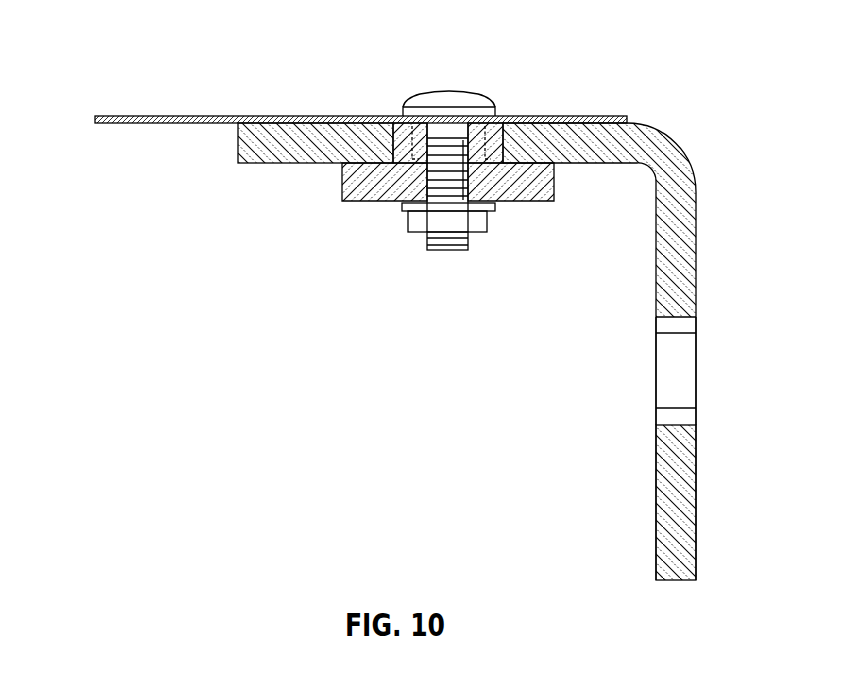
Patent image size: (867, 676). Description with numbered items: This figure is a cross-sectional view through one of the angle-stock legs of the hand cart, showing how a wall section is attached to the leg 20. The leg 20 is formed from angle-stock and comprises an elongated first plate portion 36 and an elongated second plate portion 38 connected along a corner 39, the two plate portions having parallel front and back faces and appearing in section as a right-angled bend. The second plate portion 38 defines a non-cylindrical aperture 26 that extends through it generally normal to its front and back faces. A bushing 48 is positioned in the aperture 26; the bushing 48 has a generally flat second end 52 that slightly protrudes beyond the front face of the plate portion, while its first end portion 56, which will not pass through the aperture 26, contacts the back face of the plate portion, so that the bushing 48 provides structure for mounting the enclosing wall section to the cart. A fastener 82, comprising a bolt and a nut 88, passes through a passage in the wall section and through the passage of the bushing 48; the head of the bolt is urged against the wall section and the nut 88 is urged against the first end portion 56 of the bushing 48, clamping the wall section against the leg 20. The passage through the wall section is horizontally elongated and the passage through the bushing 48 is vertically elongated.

The leg 20 is at (711, 251).
The aperture 26 is at (672, 372).
The elongated first plate portion 36 is at (697, 470).
The elongated second plate portion 38 is at (262, 165).
The corner 39 is at (677, 143).
The bushing 48 is at (371, 222).
The second end 52 is at (413, 124).
The first end portion 56 is at (362, 158).
The fastener 82 is at (455, 92).
The nut 88 is at (489, 223).